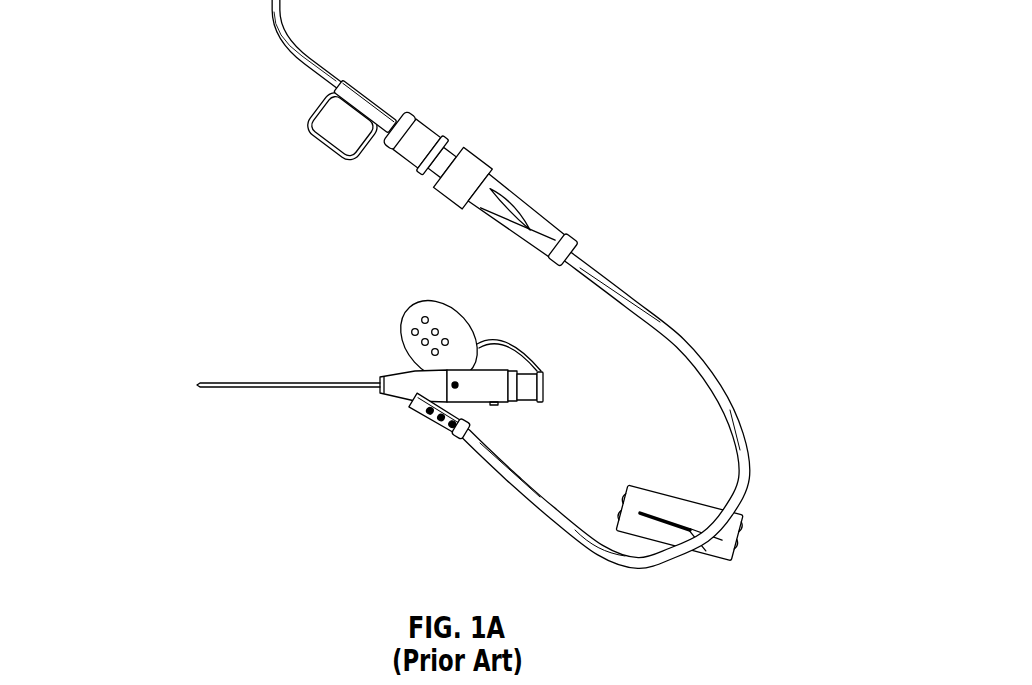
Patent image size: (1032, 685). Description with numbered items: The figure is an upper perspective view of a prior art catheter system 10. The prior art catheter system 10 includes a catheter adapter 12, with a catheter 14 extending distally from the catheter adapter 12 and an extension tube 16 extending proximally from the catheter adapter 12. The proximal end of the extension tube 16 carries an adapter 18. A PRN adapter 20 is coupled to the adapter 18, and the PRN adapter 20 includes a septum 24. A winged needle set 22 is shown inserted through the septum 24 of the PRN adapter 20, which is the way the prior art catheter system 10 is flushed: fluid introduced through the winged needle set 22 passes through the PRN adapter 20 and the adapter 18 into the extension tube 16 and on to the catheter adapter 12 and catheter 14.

The prior art catheter system 10 is at (471, 281).
The catheter adapter 12 is at (393, 383).
The catheter 14 is at (266, 384).
The extension tube 16 is at (482, 460).
The adapter 18 is at (521, 212).
The PRN adapter 20 is at (472, 163).
The winged needle set 22 is at (357, 107).
The septum 24 is at (425, 132).